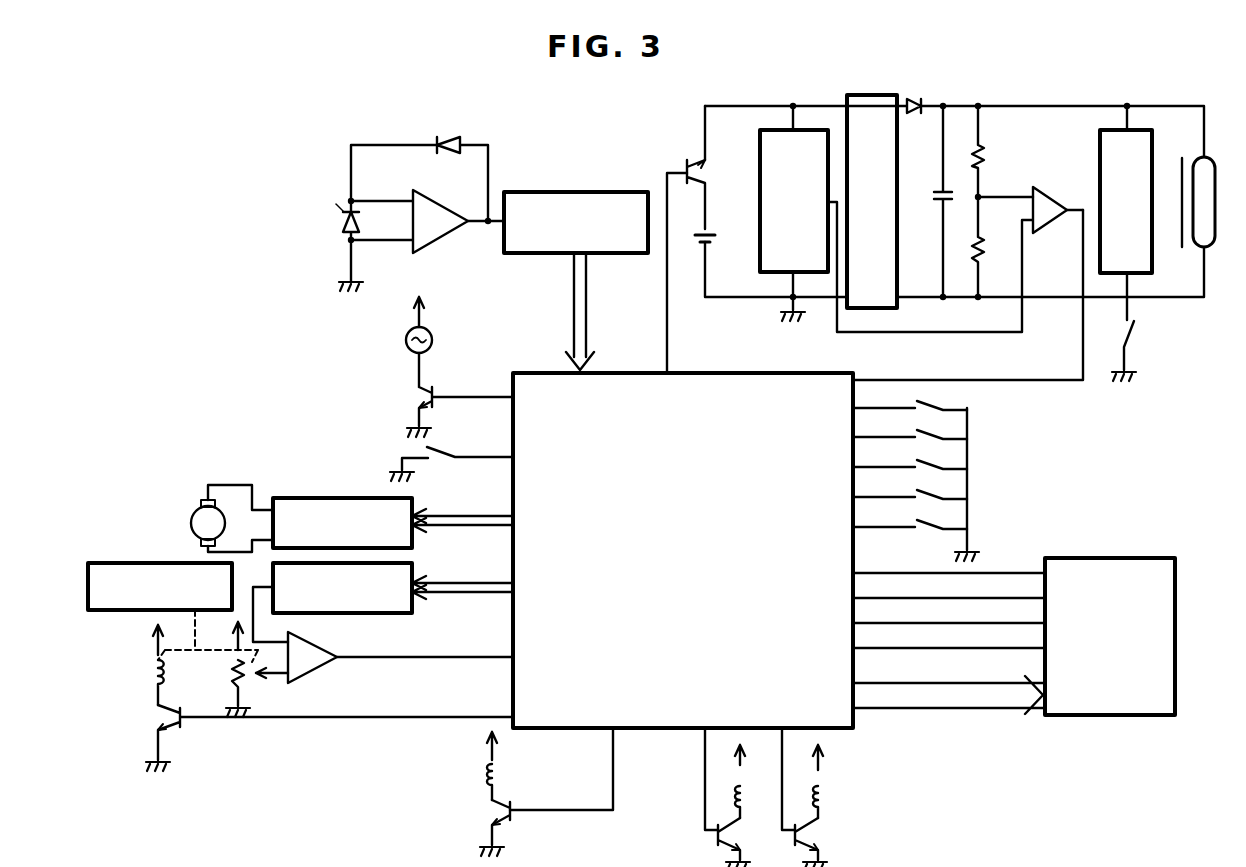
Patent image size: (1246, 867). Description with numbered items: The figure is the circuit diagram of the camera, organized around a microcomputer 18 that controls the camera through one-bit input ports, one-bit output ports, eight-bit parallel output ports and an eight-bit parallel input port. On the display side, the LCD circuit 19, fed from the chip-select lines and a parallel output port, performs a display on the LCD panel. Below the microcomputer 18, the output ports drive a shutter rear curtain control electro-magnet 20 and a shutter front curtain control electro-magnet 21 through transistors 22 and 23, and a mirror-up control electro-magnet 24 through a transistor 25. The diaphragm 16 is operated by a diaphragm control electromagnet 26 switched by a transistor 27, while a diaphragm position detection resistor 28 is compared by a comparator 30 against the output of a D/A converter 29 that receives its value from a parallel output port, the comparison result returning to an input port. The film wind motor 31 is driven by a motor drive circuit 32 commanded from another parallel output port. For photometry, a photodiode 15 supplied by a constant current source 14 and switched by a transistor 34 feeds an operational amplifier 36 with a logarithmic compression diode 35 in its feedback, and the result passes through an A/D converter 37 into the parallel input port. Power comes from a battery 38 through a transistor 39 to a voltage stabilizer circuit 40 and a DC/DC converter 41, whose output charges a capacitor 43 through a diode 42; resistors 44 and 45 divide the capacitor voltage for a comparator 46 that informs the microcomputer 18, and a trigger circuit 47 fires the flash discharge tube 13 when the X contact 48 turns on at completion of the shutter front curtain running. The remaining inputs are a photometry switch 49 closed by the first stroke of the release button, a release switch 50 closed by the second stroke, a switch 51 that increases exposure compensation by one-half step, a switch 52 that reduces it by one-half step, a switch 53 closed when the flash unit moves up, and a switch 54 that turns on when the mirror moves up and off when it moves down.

The flash discharge tube 13 is at (1215, 168).
The constant current source 14 is at (433, 341).
The photodiode 15 is at (344, 220).
The diaphragm 16 is at (124, 562).
The microcomputer 18 is at (726, 372).
The LCD circuit 19 is at (1128, 558).
The shutter rear curtain control electro-magnet 20 is at (830, 796).
The shutter front curtain control electro-magnet 21 is at (751, 795).
The transistor 22 is at (814, 838).
The transistor 23 is at (735, 832).
The mirror-up control electro-magnet 24 is at (486, 771).
The transistor 25 is at (488, 810).
The diaphragm control electromagnet 26 is at (150, 670).
The transistor 27 is at (164, 718).
The diaphragm position detection resistor 28 is at (232, 677).
The D/A converter 29 is at (380, 613).
The comparator 30 is at (317, 674).
The film wind motor 31 is at (192, 518).
The motor drive circuit 32 is at (318, 496).
The transistor 34 is at (421, 393).
The logarithmic compression diode 35 is at (456, 138).
The operational amplifier 36 is at (439, 242).
The A/D converter 37 is at (589, 191).
The battery 38 is at (716, 238).
The transistor 39 is at (694, 172).
The voltage stabilizer circuit 40 is at (760, 250).
The DC/DC converter 41 is at (872, 95).
The diode 42 is at (916, 98).
The capacitor 43 is at (940, 198).
The resistor 44 is at (984, 152).
The resistor 45 is at (981, 252).
The comparator 46 is at (1042, 232).
The trigger circuit 47 is at (1090, 156).
The X contact 48 is at (1126, 335).
The photometry switch 49 is at (922, 397).
The release switch 50 is at (922, 426).
The switch 51 is at (922, 456).
The switch 52 is at (922, 486).
The switch 53 is at (922, 516).
The switch 54 is at (436, 461).